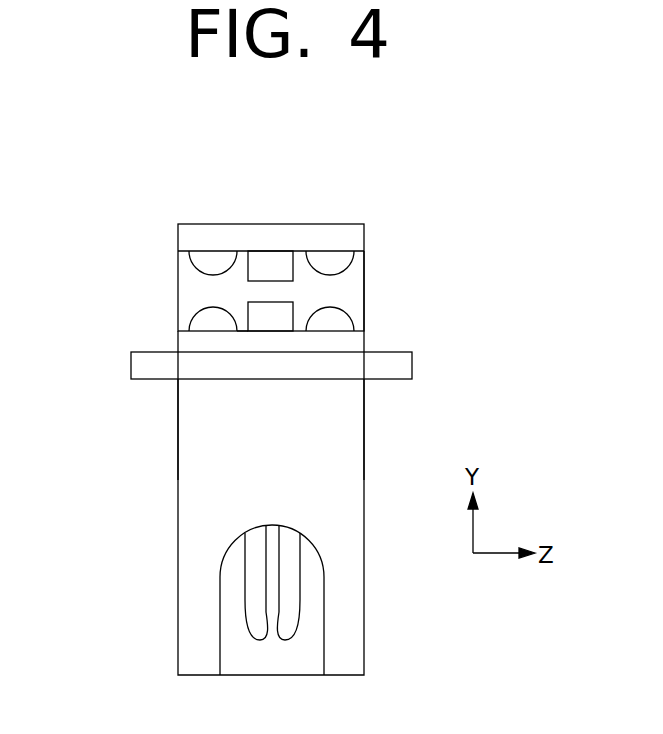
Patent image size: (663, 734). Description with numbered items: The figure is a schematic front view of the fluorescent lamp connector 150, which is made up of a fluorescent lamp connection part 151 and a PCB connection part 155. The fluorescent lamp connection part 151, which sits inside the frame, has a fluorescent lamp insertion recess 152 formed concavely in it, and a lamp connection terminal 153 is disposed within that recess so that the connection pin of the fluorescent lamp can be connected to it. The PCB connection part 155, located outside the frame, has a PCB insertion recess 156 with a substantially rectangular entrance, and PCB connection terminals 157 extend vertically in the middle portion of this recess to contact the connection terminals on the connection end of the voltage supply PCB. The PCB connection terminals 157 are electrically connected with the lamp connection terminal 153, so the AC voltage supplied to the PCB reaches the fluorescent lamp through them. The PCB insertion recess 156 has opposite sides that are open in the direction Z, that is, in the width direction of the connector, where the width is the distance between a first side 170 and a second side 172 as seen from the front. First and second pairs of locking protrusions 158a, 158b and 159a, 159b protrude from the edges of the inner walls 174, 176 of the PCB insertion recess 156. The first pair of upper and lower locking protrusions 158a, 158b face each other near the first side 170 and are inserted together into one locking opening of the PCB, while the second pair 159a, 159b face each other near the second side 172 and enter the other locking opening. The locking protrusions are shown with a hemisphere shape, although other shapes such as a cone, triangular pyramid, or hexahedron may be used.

The fluorescent lamp connector 150 is at (375, 163).
The fluorescent lamp connection part 151 is at (163, 490).
The fluorescent lamp insertion recess 152 is at (309, 646).
The lamp connection terminal 153 is at (283, 641).
The PCB connection part 155 is at (165, 229).
The PCB insertion recess 156 is at (329, 299).
The PCB connection terminals 157 is at (281, 310).
The upper locking protrusion of first pair 158a is at (206, 261).
The lower locking protrusion of first pair 158b is at (208, 309).
The upper locking protrusion of second pair 159a is at (345, 259).
The lower locking protrusion of second pair 159b is at (345, 314).
The first side 170 is at (139, 430).
The second side 172 is at (402, 429).
The inner wall 174 is at (184, 250).
The inner wall 176 is at (243, 330).